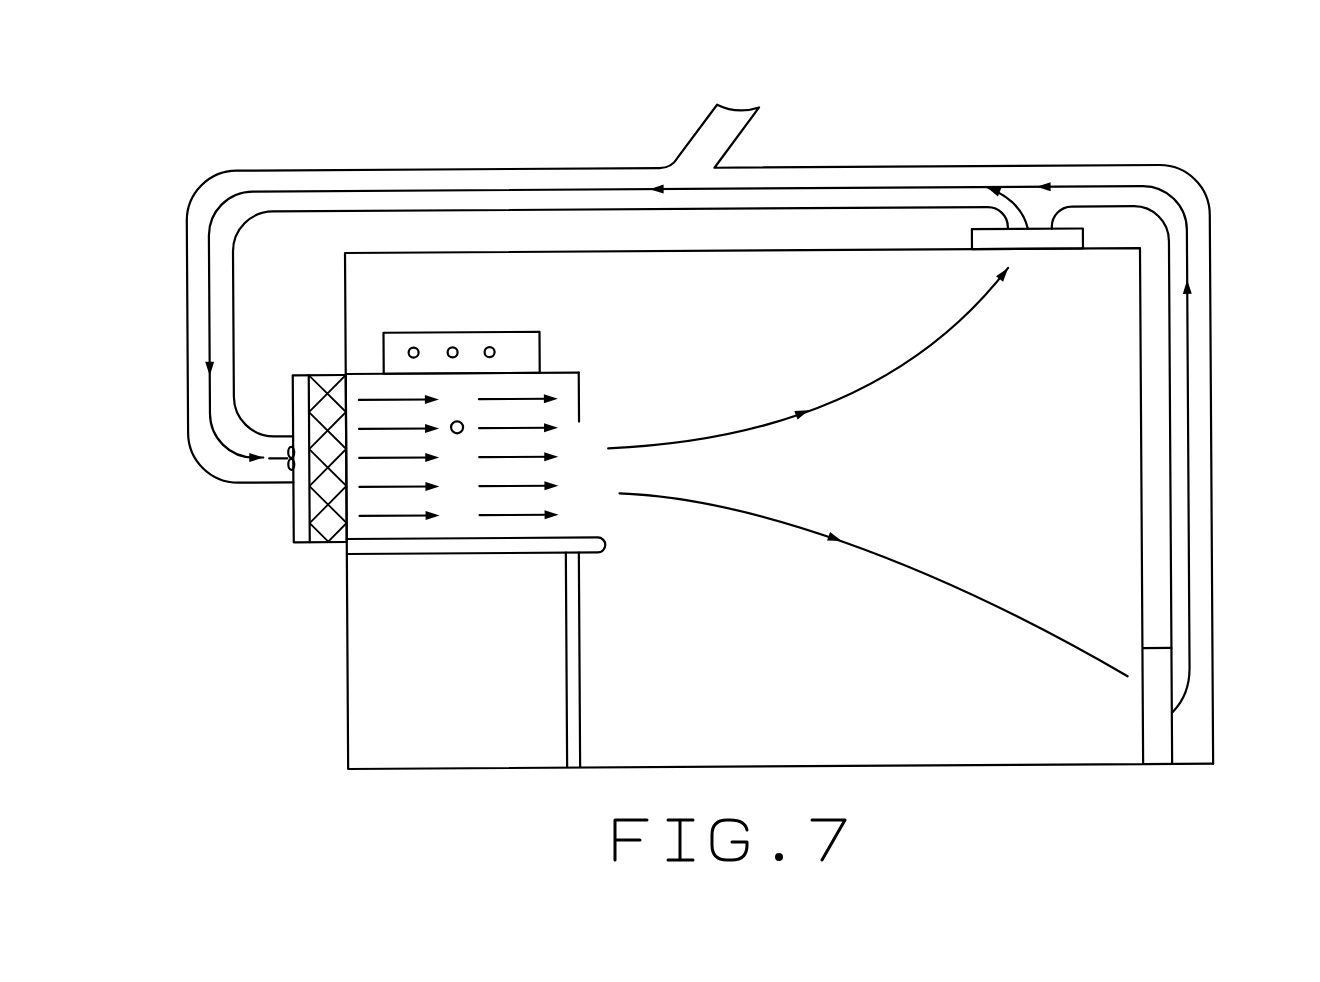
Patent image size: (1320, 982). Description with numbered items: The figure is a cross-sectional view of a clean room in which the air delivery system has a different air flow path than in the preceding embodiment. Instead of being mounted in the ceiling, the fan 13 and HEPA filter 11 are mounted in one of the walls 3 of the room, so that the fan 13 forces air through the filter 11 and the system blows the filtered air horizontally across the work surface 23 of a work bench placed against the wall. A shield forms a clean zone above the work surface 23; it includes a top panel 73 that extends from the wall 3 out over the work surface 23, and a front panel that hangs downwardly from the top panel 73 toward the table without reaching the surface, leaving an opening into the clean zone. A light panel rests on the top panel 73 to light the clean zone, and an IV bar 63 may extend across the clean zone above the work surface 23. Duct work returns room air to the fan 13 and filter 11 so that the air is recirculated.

The walls 3 is at (345, 673).
The HEPA filter 11 is at (325, 545).
The fan 13 is at (290, 478).
The top panel 73 is at (560, 373).
The work surface 23 is at (580, 540).
The IV bar 63 is at (456, 434).